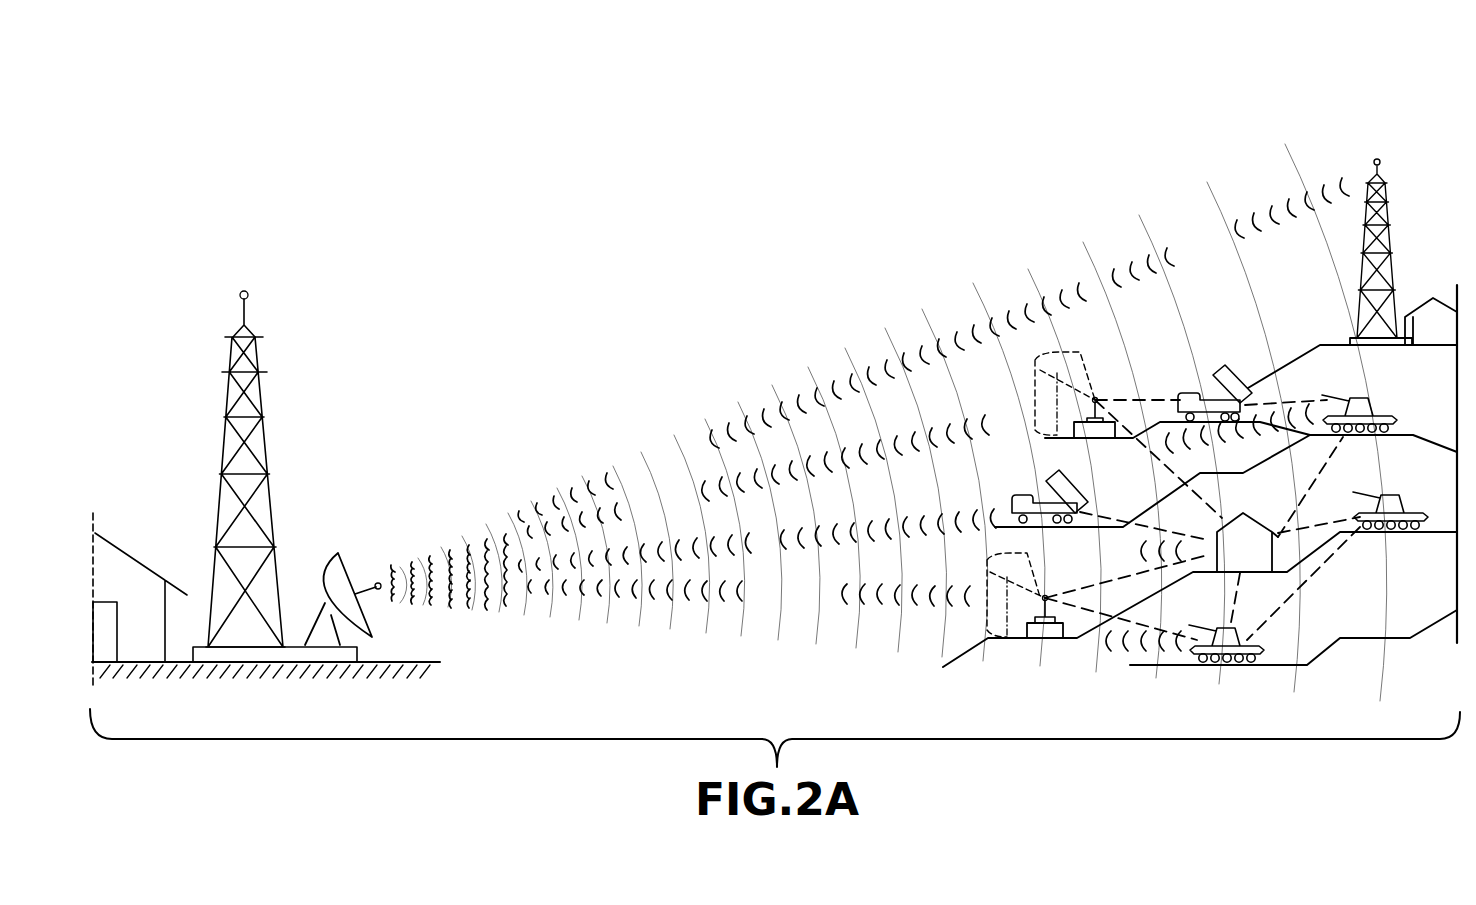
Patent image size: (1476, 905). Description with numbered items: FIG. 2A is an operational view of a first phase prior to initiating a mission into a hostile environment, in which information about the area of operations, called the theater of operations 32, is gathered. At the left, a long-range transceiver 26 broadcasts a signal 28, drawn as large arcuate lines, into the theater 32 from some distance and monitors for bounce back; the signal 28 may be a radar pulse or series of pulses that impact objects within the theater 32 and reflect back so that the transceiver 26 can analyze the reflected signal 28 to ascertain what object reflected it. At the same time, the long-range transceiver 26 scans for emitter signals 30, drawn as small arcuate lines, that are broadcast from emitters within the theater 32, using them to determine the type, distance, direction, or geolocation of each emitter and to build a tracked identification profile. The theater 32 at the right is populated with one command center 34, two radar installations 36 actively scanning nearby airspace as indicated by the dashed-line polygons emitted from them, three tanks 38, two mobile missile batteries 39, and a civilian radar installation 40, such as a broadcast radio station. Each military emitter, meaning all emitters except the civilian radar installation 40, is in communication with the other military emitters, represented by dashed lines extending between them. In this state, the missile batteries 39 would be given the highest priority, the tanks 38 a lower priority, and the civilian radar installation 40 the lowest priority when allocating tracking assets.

The long-range transceiver 26 is at (314, 427).
The signal 28 is at (553, 613).
The emitter signals 30 is at (692, 497).
The theater of operations 32 is at (1210, 270).
The command center 34 is at (1247, 542).
The radar installations 36 is at (1113, 420).
The tanks 38 is at (1375, 407).
The mobile missile batteries 39 is at (1228, 378).
The civilian radar installation 40 is at (1422, 312).